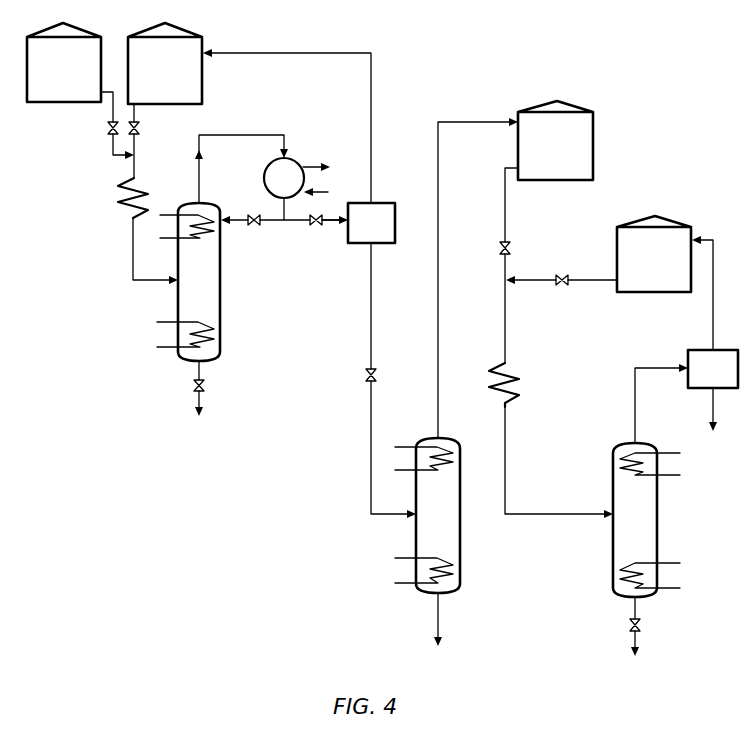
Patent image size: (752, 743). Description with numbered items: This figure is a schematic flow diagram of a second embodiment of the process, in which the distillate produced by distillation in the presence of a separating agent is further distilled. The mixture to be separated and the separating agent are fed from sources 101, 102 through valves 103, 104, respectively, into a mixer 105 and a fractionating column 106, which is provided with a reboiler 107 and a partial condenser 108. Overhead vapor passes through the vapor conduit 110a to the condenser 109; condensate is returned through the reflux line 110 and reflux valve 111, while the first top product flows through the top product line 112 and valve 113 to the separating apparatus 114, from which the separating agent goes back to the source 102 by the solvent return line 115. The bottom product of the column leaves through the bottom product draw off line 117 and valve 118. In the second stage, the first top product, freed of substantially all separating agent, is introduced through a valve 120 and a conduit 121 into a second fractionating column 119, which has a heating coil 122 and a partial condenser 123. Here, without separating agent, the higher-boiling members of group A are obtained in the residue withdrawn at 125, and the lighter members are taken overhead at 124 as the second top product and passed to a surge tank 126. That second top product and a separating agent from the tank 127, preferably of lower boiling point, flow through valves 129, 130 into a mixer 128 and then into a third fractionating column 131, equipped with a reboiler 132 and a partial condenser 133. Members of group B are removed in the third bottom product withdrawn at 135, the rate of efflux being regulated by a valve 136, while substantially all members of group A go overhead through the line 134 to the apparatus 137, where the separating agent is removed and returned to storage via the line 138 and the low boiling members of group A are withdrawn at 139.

The source 101 is at (66, 27).
The source 102 is at (170, 27).
The valve 103 is at (108, 128).
The valve 104 is at (139, 129).
The mixer 105 is at (116, 188).
The fractionating column 106 is at (221, 282).
The reboiler 107 is at (162, 318).
The partial condenser 108 is at (172, 240).
The condenser 109 is at (263, 168).
The reflux line 110 is at (234, 214).
The vapor conduit 110a is at (222, 140).
The reflux valve 111 is at (252, 228).
The top product line 112 is at (332, 214).
The valve 113 is at (314, 228).
The separating apparatus 114 is at (381, 204).
The solvent return line 115 is at (312, 48).
The bottom product draw off line 117 is at (200, 372).
The valve 118 is at (200, 391).
The fractionating column 119 is at (462, 543).
The valve 120 is at (363, 375).
The conduit 121 is at (366, 322).
The heating coil 122 is at (400, 553).
The partial condenser 123 is at (410, 444).
The second top product withdrawal 124 is at (440, 428).
The second distillation residue withdrawal 125 is at (434, 622).
The surge tank 126 is at (568, 104).
The tank 127 is at (656, 219).
The mixer 128 is at (509, 370).
The valve 129 is at (502, 244).
The valve 130 is at (550, 273).
The fractionating column 131 is at (612, 490).
The reboiler 132 is at (661, 565).
The partial condenser 133 is at (674, 478).
The third overhead product line 134 is at (634, 408).
The third bottom product withdrawal 135 is at (637, 611).
The valve 136 is at (637, 634).
The apparatus 137 is at (690, 356).
The line 138 is at (710, 314).
The withdrawal line 139 is at (710, 407).